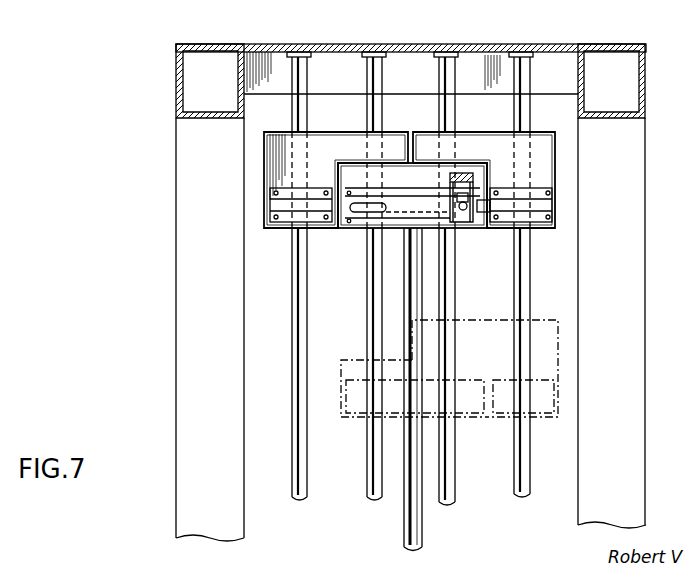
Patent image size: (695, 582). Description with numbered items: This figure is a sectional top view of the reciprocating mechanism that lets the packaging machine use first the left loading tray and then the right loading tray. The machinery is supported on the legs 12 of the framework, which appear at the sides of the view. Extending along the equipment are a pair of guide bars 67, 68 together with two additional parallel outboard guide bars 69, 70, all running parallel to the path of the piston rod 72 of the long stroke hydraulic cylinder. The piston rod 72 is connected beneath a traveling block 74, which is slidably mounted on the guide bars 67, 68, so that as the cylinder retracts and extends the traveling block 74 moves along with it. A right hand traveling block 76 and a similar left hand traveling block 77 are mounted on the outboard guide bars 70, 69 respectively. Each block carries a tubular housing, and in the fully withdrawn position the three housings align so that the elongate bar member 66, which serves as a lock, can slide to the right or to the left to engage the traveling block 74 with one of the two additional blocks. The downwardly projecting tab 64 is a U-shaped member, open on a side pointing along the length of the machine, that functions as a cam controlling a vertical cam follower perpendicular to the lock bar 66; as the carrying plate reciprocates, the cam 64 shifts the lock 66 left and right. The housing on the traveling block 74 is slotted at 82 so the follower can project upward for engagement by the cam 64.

The legs 12 is at (176, 76).
The tab 64 is at (462, 172).
The elongate bar member 66 is at (537, 197).
The guide bar 67 is at (382, 68).
The guide bar 68 is at (458, 70).
The guide bar 69 is at (308, 68).
The guide bar 70 is at (535, 70).
The piston rod 72 is at (423, 540).
The traveling block 74 is at (472, 222).
The right hand traveling block 76 is at (555, 158).
The left hand traveling block 77 is at (270, 163).
The slot 82 is at (365, 209).